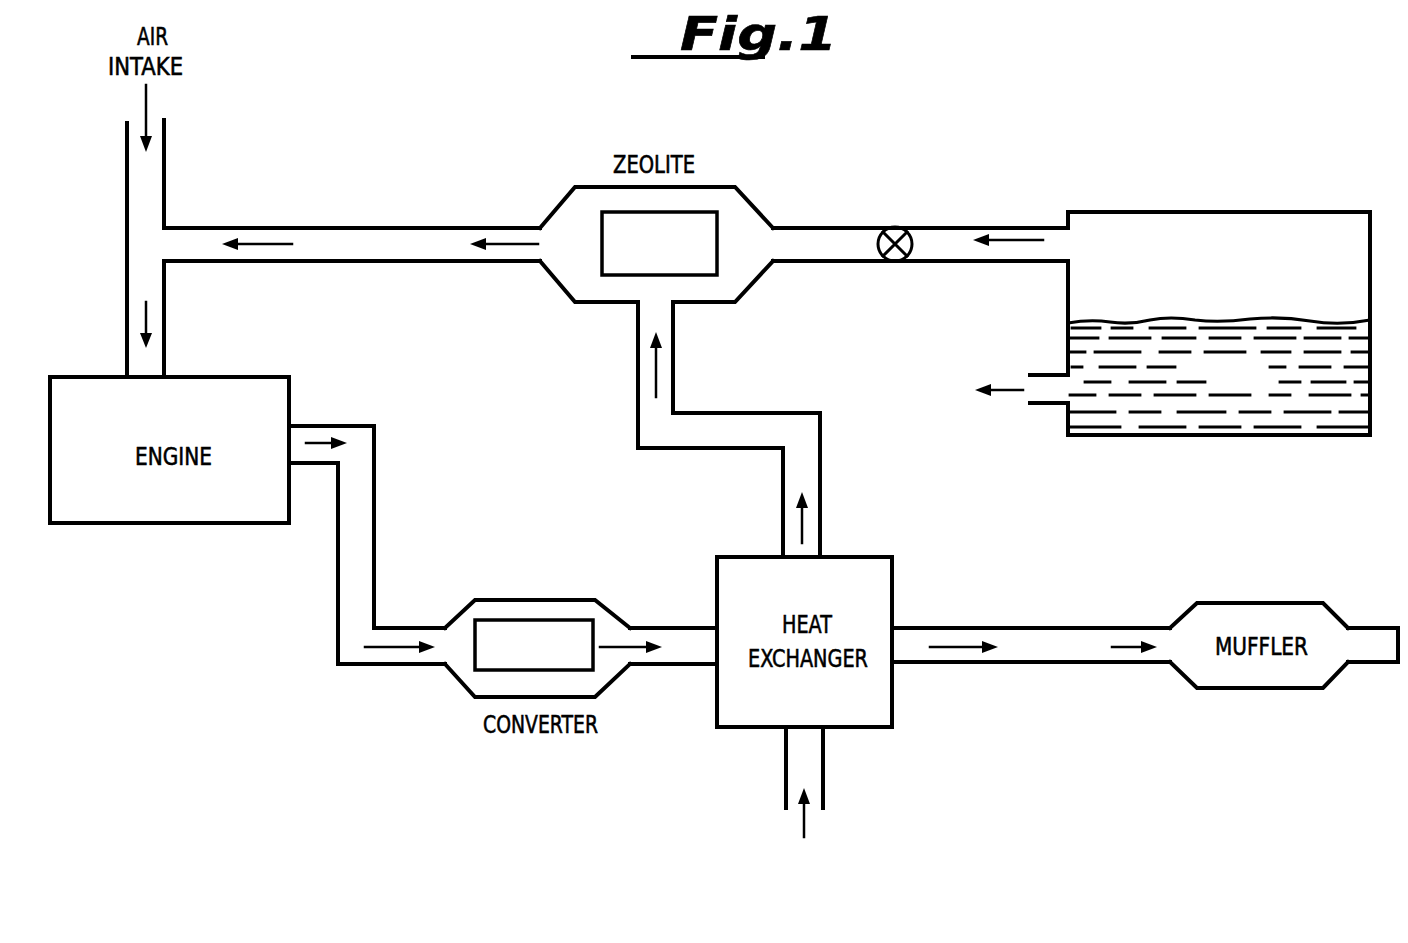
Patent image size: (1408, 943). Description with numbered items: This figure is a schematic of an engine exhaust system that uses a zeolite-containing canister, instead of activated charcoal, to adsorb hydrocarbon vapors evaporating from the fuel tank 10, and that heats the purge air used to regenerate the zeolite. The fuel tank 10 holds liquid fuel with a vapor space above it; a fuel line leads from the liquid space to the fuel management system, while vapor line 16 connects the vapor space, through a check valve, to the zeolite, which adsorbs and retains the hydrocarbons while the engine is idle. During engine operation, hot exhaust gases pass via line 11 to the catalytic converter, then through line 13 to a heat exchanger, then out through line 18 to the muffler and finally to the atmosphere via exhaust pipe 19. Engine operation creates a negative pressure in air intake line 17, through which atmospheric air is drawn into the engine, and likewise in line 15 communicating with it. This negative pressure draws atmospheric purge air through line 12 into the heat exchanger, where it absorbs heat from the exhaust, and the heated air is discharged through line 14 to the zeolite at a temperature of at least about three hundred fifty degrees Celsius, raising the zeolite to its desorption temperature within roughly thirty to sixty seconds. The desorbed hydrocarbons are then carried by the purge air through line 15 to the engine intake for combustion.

The fuel tank 10 is at (1293, 212).
The line 11 is at (368, 598).
The line 12 is at (812, 753).
The line 13 is at (682, 653).
The line 14 is at (668, 378).
The line 15 is at (385, 230).
The vapor line 16 is at (827, 230).
The air intake line 17 is at (158, 183).
The line 18 is at (1120, 630).
The exhaust pipe 19 is at (1378, 628).